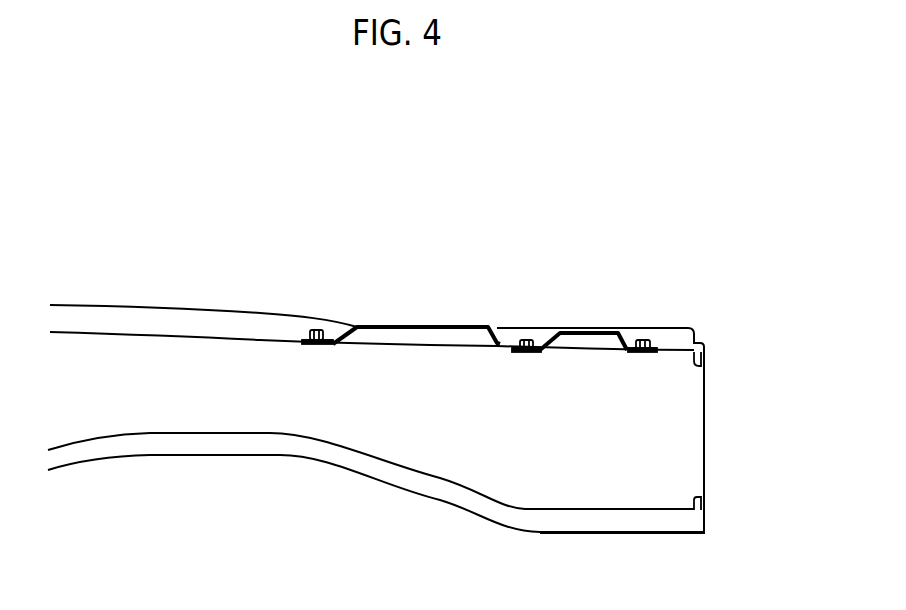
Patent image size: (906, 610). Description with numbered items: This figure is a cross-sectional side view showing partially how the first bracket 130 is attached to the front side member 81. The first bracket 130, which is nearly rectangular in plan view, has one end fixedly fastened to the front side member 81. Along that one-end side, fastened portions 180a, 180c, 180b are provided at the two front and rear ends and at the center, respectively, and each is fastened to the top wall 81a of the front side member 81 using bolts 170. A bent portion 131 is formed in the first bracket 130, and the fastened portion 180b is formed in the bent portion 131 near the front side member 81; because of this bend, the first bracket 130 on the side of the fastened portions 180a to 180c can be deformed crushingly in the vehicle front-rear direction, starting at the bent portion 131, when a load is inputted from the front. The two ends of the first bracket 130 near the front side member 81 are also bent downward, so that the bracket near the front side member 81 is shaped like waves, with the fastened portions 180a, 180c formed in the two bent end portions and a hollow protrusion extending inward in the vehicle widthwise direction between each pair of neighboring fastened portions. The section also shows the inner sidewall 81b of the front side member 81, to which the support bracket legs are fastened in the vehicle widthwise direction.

The front side member 81 is at (707, 407).
The top wall 81a is at (252, 340).
The inner sidewall 81b is at (688, 455).
The first bracket 130 is at (430, 325).
The bent portion 131 is at (545, 338).
The bolts 170 is at (316, 330).
The fastened portion 180a is at (643, 354).
The fastened portion 180b is at (527, 353).
The fastened portion 180c is at (308, 346).